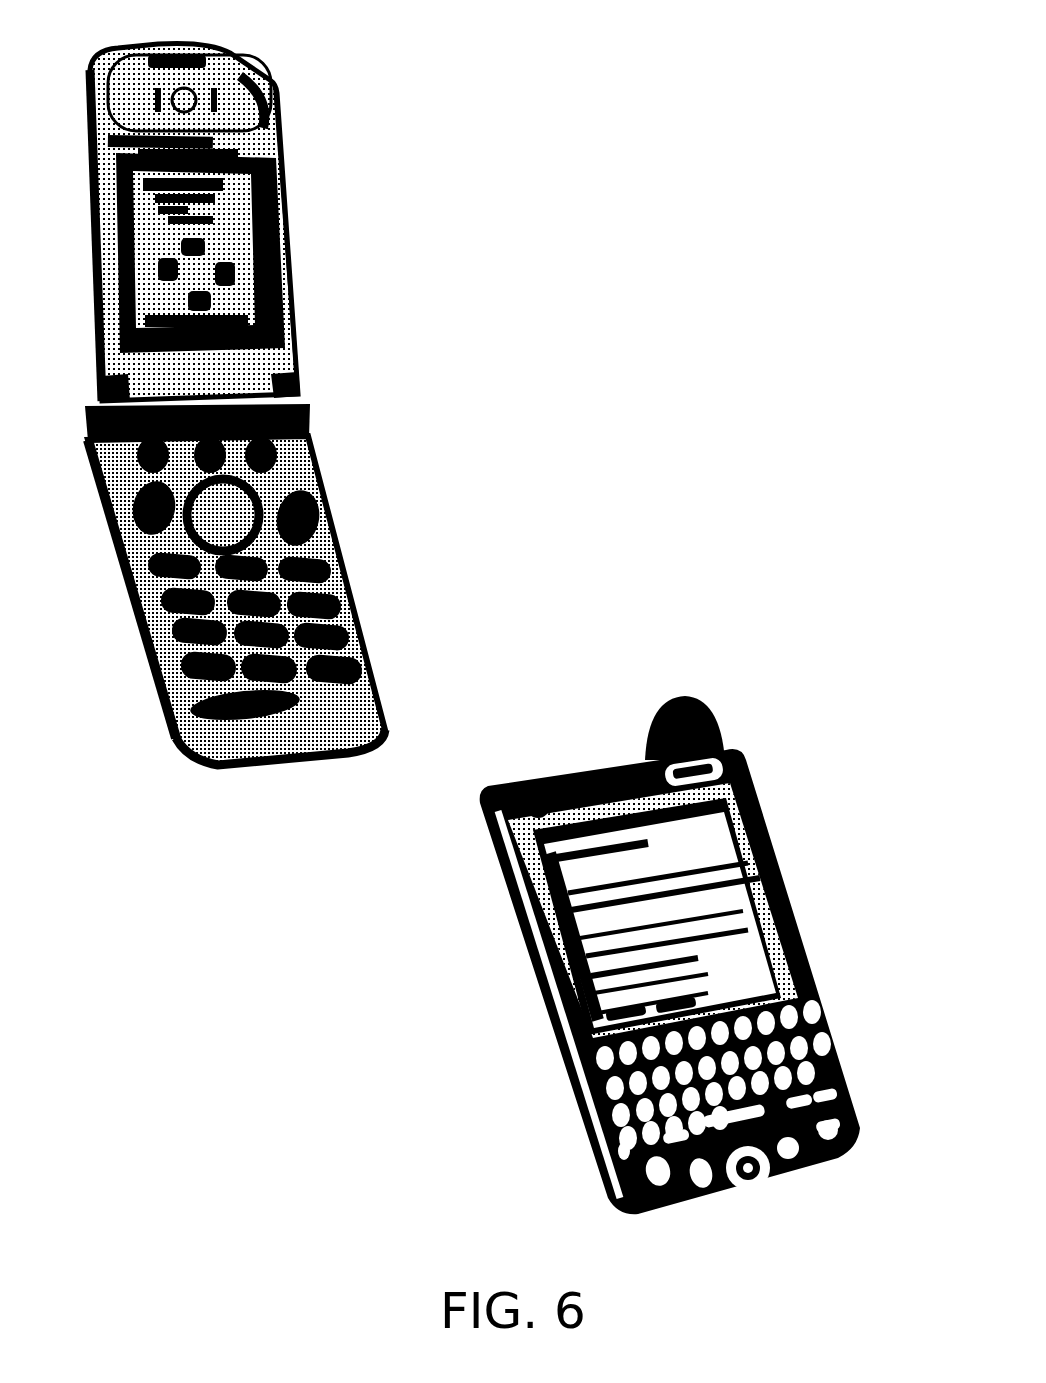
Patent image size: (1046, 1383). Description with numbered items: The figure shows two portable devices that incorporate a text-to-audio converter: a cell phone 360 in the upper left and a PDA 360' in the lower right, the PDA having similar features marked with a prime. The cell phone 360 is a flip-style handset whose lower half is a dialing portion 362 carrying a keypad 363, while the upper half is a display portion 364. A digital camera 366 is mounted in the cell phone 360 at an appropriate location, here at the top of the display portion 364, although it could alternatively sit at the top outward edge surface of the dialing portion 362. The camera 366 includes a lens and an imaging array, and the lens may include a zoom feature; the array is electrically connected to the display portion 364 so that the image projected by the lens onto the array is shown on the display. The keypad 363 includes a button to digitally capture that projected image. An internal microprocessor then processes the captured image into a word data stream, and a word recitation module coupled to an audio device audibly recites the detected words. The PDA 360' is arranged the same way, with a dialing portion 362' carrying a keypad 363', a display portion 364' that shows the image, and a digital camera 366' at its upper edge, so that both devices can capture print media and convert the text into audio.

The cell phone 360 is at (314, 404).
The dialing portion 362 is at (268, 600).
The keypad 363 is at (298, 619).
The display portion 364 is at (251, 253).
The digital camera 366 is at (239, 87).
The PDA 360' is at (711, 939).
The dialing portion 362' is at (662, 981).
The keypad 363' is at (770, 1062).
The display portion 364' is at (703, 916).
The digital camera 366' is at (722, 712).